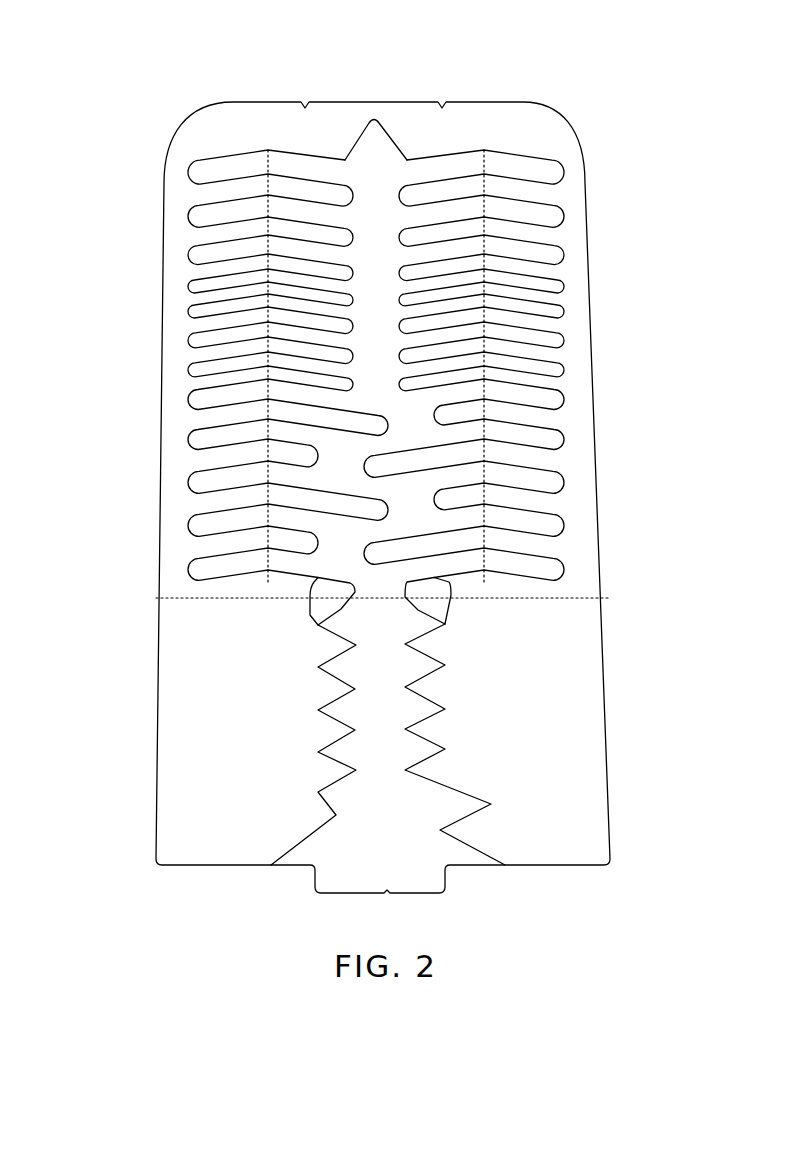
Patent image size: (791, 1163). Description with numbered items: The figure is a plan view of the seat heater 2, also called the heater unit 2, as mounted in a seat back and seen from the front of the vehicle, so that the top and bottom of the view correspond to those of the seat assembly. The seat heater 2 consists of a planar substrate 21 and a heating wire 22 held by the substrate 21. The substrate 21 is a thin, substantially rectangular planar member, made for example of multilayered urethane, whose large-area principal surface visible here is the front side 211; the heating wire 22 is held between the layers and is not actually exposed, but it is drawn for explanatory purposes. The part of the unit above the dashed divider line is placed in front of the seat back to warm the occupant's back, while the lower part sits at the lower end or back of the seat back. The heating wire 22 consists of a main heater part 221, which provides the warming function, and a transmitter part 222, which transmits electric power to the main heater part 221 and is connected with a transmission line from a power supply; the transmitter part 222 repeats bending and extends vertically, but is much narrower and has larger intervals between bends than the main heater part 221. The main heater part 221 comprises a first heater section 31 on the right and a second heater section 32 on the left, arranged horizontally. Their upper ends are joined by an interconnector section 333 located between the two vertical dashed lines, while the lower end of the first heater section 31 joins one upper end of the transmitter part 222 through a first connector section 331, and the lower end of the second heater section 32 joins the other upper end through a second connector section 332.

The seat heater 2 is at (123, 30).
The substrate 21 is at (606, 803).
The front side 211 is at (591, 703).
The heating wire 22 is at (339, 723).
The main heater part 221 is at (233, 584).
The transmitter part 222 is at (336, 678).
The first heater section 31 is at (579, 325).
The second heater section 32 is at (172, 360).
The first connector section 331 is at (448, 595).
The second connector section 332 is at (307, 614).
The interconnector section 333 is at (359, 124).